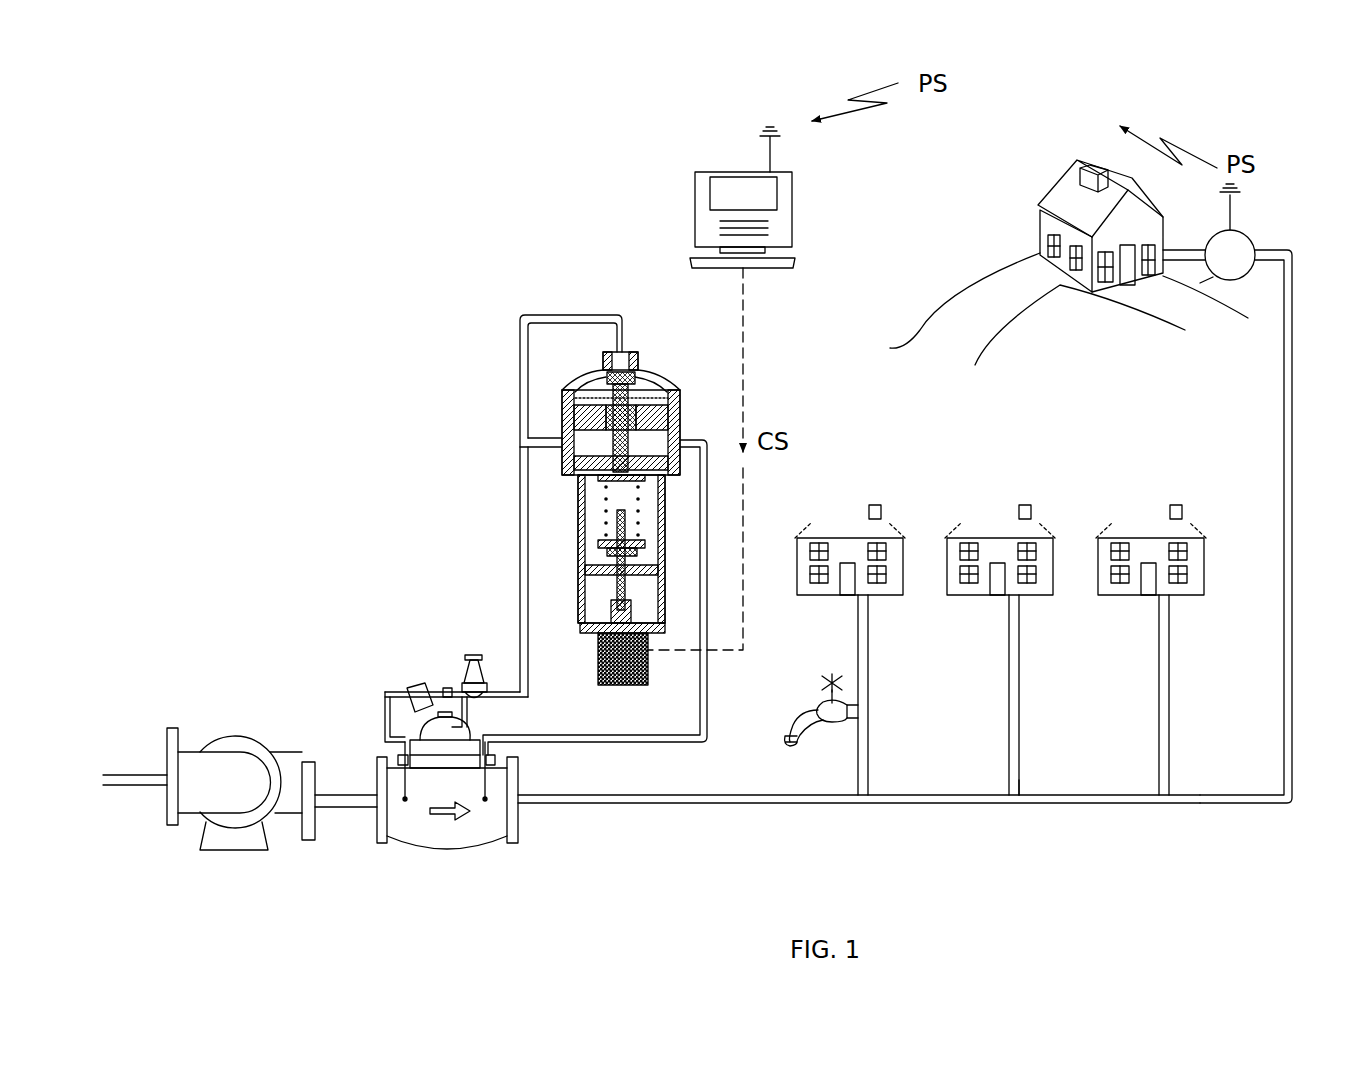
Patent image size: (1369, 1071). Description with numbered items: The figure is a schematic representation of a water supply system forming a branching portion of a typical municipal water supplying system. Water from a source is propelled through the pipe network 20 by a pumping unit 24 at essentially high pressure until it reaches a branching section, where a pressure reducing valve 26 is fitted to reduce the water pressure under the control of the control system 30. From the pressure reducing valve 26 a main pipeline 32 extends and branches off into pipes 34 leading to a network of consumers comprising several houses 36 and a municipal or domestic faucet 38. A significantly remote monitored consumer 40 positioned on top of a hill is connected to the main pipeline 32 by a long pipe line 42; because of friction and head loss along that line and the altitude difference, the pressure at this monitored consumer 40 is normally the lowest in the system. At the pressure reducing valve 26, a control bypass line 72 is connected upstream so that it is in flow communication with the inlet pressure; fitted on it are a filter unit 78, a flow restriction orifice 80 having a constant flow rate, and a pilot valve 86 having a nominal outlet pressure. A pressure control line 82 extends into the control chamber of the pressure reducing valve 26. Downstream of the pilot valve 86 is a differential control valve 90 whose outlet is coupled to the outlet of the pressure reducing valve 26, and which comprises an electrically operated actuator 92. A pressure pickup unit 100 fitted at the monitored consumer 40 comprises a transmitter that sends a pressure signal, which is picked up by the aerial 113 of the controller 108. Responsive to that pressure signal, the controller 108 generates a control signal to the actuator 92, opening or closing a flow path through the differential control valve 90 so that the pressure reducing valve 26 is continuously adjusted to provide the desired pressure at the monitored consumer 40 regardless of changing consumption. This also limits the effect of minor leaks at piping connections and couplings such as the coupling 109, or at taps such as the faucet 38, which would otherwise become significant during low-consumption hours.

The pipe network 20 is at (138, 786).
The pumping unit 24 is at (215, 778).
The pressure reducing valve 26 is at (455, 850).
The control system 30 is at (395, 636).
The main pipeline 32 is at (905, 803).
The pipe 34 is at (868, 682).
The house 36 is at (843, 525).
The faucet 38 is at (812, 713).
The monitored consumer 40 is at (1075, 210).
The pipe line 42 is at (1292, 680).
The control bypass line 72 is at (382, 740).
The filter unit 78 is at (405, 690).
The flow restriction orifice 80 is at (446, 688).
The pressure control line 82 is at (466, 712).
The pilot valve 86 is at (478, 665).
The differential control valve 90 is at (560, 358).
The electrically operated actuator 92 is at (625, 685).
The pressure pickup unit 100 is at (1256, 232).
The controller 108 is at (695, 212).
The connection or coupling 109 is at (1022, 785).
The aerial 113 is at (770, 152).